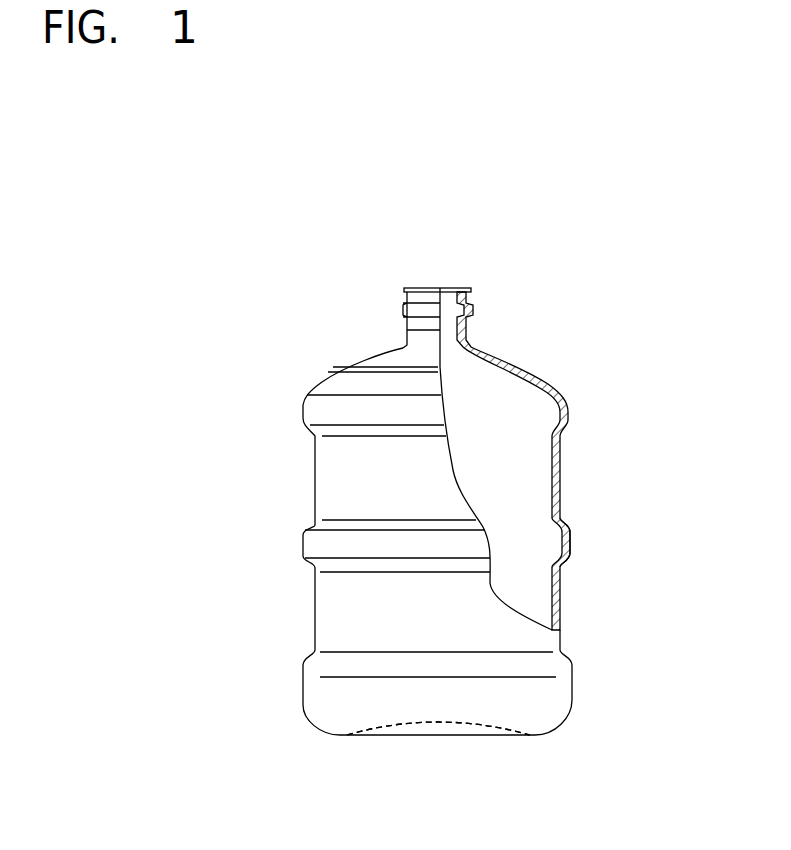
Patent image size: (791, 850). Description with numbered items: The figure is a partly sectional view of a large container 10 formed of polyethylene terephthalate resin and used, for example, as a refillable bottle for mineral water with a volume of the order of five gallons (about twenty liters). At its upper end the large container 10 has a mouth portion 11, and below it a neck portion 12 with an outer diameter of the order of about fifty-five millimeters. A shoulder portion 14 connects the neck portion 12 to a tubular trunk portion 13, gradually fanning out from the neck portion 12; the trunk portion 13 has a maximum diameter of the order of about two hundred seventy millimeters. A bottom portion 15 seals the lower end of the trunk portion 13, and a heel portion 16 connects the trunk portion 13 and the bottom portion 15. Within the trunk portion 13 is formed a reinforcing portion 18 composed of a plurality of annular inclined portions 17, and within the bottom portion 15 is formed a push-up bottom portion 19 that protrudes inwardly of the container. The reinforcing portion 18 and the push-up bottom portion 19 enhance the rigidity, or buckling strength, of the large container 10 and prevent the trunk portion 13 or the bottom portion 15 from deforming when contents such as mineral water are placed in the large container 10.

The large container 10 is at (647, 195).
The mouth portion 11 is at (452, 288).
The neck portion 12 is at (418, 332).
The tubular trunk portion 13 is at (598, 485).
The shoulder portion 14 is at (545, 370).
The bottom portion 15 is at (437, 730).
The heel portion 16 is at (577, 717).
The annular inclined portion 17 is at (567, 525).
The reinforcing portion 18 is at (640, 512).
The push-up bottom portion 19 is at (438, 728).